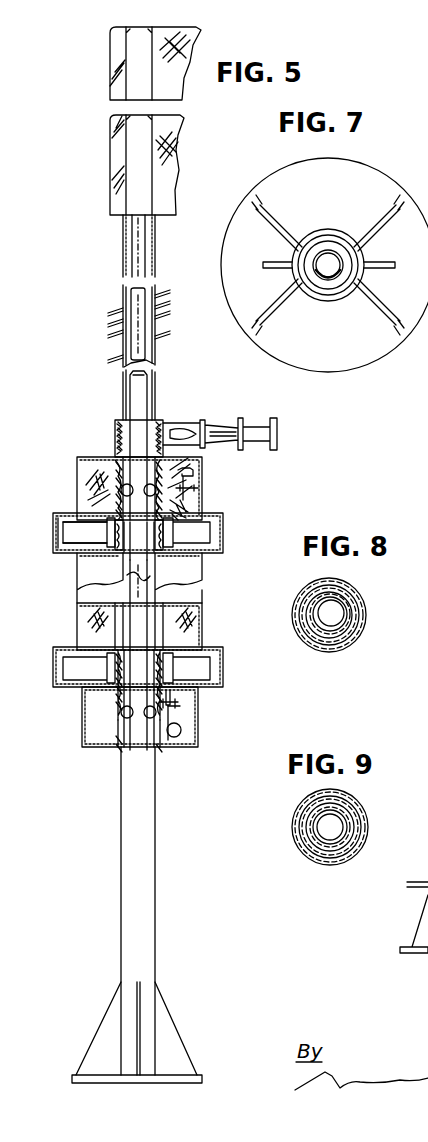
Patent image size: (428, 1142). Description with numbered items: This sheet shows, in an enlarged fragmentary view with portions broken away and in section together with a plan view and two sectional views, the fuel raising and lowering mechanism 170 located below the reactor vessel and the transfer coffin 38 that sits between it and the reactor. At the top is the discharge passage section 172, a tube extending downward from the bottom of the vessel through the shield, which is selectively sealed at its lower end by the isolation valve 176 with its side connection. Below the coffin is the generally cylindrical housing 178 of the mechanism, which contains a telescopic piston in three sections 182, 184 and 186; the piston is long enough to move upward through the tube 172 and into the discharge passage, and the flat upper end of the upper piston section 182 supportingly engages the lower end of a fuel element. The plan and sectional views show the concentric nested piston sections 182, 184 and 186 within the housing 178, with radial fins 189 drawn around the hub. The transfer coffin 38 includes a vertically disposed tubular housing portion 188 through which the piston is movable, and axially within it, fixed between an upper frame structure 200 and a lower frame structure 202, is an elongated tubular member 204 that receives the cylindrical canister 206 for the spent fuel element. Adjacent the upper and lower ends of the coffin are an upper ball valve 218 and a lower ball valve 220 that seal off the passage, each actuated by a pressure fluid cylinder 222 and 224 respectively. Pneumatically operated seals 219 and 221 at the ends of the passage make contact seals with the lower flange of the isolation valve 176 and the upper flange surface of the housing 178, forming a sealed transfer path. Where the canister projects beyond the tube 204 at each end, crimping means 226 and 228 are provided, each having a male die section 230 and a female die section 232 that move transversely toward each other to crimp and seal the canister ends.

In FIG. 5, the transfer coffin 38 is at (216, 574).
In FIG. 5, the fuel raising and lowering mechanism 170 is at (160, 822).
In FIG. 5, the discharge passage section 172 is at (126, 188).
In FIG. 5, the isolation valve 176 is at (218, 424).
In FIG. 5, the cylindrical housing 178 is at (158, 876).
In FIG. 7, the cylindrical housing 178 is at (326, 232).
In FIG. 8, the cylindrical housing 178 is at (358, 596).
In FIG. 9, the cylindrical housing 178 is at (298, 842).
In FIG. 5, the upper piston section 182 is at (134, 254).
In FIG. 7, the upper piston section 182 is at (338, 282).
In FIG. 8, the upper piston section 182 is at (294, 628).
In FIG. 9, the upper piston section 182 is at (346, 806).
In FIG. 5, the piston section 184 is at (134, 407).
In FIG. 8, the piston section 184 is at (330, 640).
In FIG. 9, the piston section 184 is at (344, 818).
In FIG. 7, the piston section 186 is at (348, 262).
In FIG. 8, the piston section 186 is at (366, 614).
In FIG. 9, the piston section 186 is at (306, 806).
In FIG. 5, the tubular housing portion 188 is at (200, 488).
In FIG. 7, the radial fins 189 is at (305, 280).
In FIG. 5, the upper frame structure 200 is at (220, 468).
In FIG. 5, the lower frame structure 202 is at (238, 690).
In FIG. 5, the tubular member 204 is at (150, 600).
In FIG. 5, the canister 206 is at (118, 563).
In FIG. 5, the upper ball valve 218 is at (118, 492).
In FIG. 5, the upper pneumatic seal 219 is at (117, 452).
In FIG. 5, the lower ball valve 220 is at (122, 716).
In FIG. 5, the lower pneumatic seal 221 is at (122, 750).
In FIG. 5, the pressure fluid cylinder 222 is at (190, 468).
In FIG. 5, the pressure fluid cylinder 224 is at (182, 740).
In FIG. 5, the upper crimping means 226 is at (186, 514).
In FIG. 5, the lower crimping means 228 is at (176, 690).
In FIG. 5, the male die section 230 is at (162, 656).
In FIG. 5, the female die section 232 is at (120, 656).